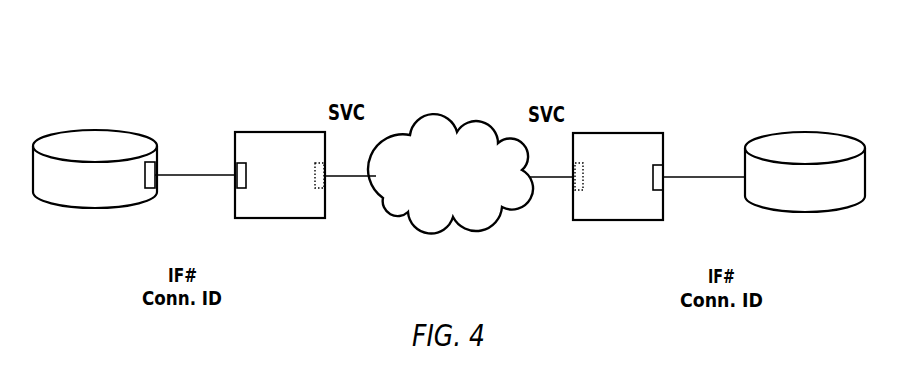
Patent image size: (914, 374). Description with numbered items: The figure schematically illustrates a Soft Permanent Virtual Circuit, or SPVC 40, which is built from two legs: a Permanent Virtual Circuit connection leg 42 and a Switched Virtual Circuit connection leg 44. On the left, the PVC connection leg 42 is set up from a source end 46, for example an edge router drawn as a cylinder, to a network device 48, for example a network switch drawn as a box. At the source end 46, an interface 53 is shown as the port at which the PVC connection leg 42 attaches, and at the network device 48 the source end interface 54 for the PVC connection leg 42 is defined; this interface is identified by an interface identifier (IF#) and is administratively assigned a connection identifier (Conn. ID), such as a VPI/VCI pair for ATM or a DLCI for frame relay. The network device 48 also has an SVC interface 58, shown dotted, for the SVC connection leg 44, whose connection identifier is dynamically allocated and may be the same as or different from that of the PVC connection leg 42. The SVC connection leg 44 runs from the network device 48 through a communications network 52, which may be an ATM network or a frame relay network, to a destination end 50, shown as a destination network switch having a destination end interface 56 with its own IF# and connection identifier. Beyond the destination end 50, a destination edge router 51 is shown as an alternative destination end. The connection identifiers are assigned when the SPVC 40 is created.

The SPVC 40 is at (744, 78).
The PVC connection leg 42 is at (166, 92).
The SVC connection leg 44 is at (420, 74).
The source end 46 is at (98, 208).
The network device 48 is at (280, 218).
The destination end 50 is at (618, 220).
The destination edge router 51 is at (807, 212).
The communications network 52 is at (435, 232).
The interface port of node 46 53 is at (157, 188).
The source end interface 54 is at (233, 187).
The destination end interface 56 is at (663, 188).
The SVC interface 58 is at (327, 187).